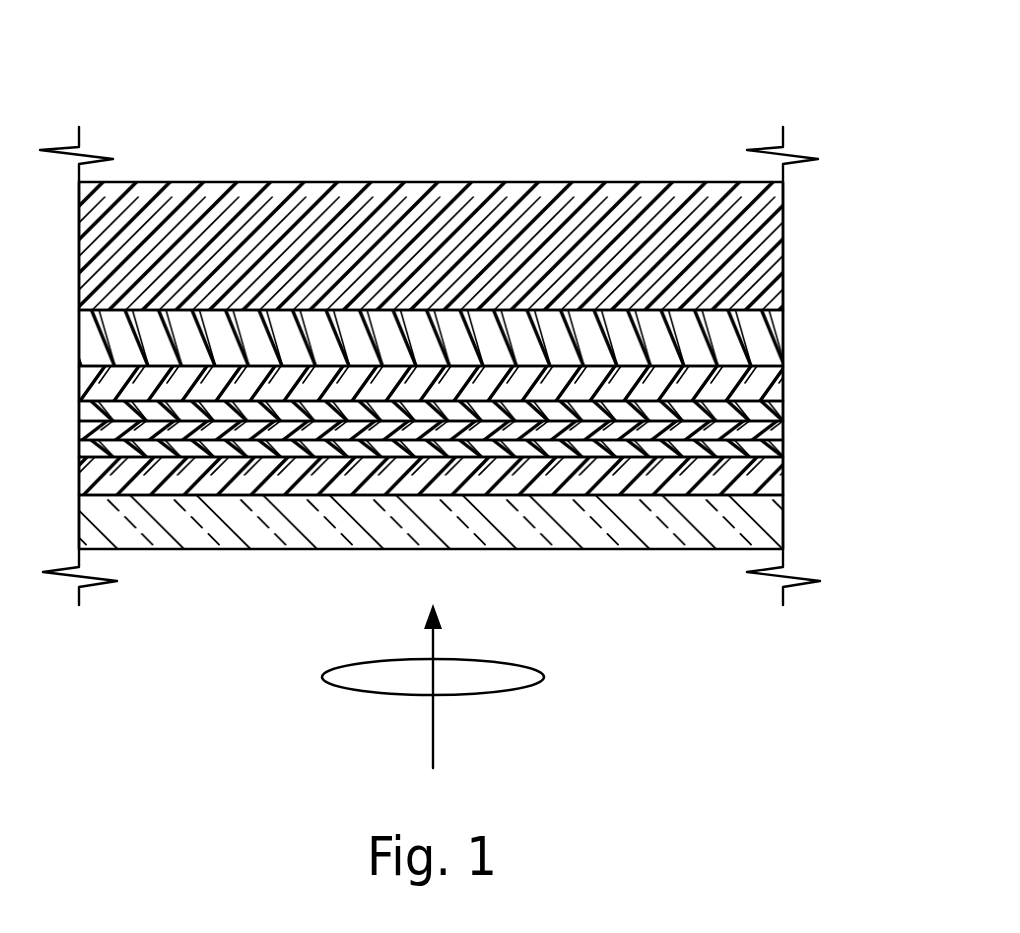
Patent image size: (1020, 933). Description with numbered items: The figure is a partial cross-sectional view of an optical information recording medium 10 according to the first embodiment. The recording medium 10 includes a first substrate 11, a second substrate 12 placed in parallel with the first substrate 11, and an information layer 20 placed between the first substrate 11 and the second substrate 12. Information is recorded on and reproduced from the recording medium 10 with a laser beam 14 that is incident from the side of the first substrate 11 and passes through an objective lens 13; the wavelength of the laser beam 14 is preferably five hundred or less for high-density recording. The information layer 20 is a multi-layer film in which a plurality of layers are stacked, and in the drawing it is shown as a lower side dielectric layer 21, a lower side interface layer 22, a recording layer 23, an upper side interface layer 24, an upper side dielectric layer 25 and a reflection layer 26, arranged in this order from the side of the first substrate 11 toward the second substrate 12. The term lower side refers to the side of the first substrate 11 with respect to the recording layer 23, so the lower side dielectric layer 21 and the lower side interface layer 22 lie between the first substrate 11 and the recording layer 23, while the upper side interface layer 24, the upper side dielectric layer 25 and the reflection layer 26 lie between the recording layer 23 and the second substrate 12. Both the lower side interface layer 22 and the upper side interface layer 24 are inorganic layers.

The optical information recording medium 10 is at (92, 109).
The first substrate 11 is at (783, 522).
The second substrate 12 is at (783, 237).
The objective lens 13 is at (544, 677).
The laser beam 14 is at (433, 750).
The information layer 20 is at (497, 403).
The lower side dielectric layer 21 is at (467, 481).
The lower side interface layer 22 is at (783, 447).
The recording layer 23 is at (783, 428).
The upper side interface layer 24 is at (783, 413).
The upper side dielectric layer 25 is at (783, 383).
The reflection layer 26 is at (783, 337).